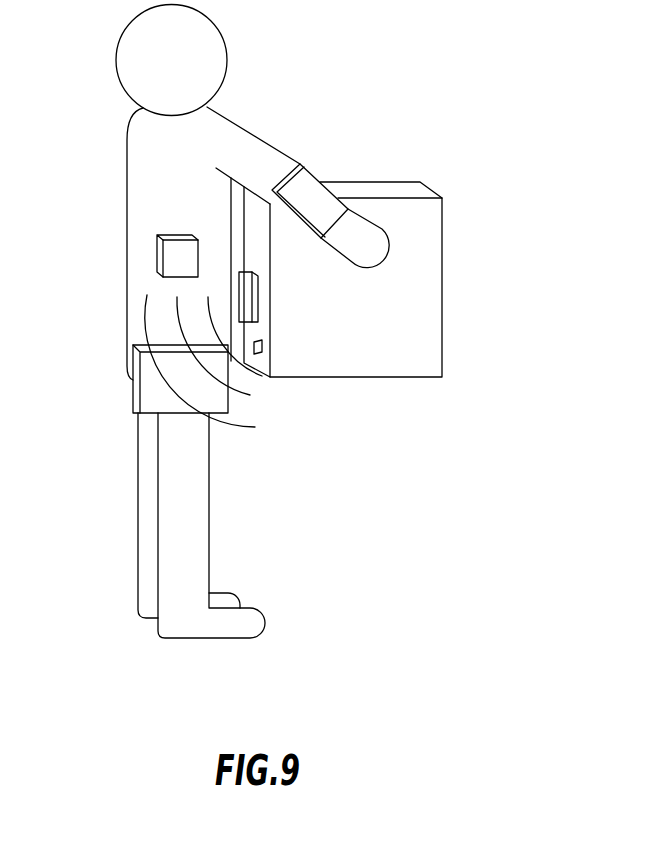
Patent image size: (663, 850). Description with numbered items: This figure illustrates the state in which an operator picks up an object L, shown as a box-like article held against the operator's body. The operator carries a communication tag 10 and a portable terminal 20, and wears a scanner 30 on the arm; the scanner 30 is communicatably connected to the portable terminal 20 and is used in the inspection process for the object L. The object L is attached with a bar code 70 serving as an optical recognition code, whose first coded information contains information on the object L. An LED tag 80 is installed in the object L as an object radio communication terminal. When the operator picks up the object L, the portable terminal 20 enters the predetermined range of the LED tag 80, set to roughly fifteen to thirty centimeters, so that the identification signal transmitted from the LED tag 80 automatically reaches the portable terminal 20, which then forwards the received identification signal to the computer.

The wearable device 10 is at (156, 261).
The shorts / lower garment 20 is at (133, 408).
The wristband device 30 is at (309, 172).
The panel / plate 70 is at (266, 378).
The sensor 80 is at (258, 325).
The load / box L is at (442, 347).